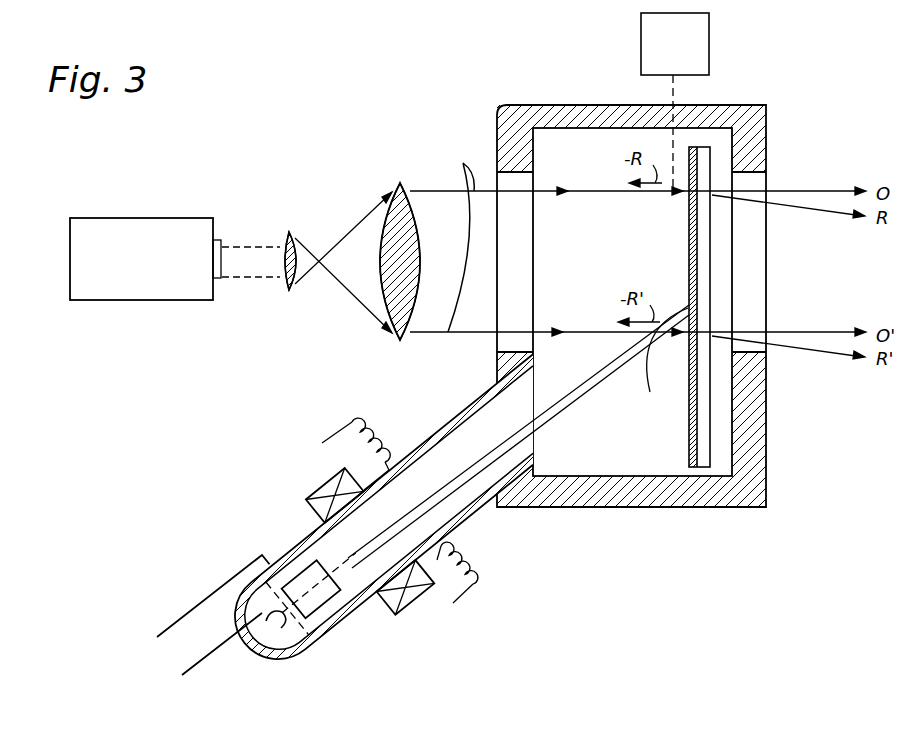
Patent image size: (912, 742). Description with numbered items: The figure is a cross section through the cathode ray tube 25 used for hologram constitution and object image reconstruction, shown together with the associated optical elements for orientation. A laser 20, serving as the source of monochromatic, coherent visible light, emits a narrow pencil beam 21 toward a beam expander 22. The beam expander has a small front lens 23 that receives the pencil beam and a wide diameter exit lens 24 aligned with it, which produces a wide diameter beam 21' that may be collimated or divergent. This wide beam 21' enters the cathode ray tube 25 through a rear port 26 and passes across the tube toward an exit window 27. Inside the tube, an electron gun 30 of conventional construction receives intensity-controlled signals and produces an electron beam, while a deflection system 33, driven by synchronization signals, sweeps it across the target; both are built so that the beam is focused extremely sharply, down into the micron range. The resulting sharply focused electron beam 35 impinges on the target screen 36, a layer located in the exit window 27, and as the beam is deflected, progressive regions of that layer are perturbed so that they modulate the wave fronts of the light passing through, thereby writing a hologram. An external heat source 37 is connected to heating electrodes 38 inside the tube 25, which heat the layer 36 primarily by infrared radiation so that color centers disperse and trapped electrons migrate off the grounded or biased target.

The laser 20 is at (168, 218).
The pencil beam 21 is at (251, 232).
The wide diameter beam 21' is at (453, 240).
The beam expander 22 is at (350, 193).
The small front lens 23 is at (290, 291).
The wide diameter exit lens 24 is at (392, 292).
The cathode ray tube 25 is at (600, 90).
The rear port 26 is at (497, 178).
The exit window 27 is at (766, 181).
The electron gun 30 is at (291, 621).
The deflection system 33 is at (430, 601).
The sharply focused electron beam 35 is at (562, 404).
The target screen 36 is at (663, 363).
The external heat source 37 is at (693, 60).
The heating electrodes 38 is at (675, 143).